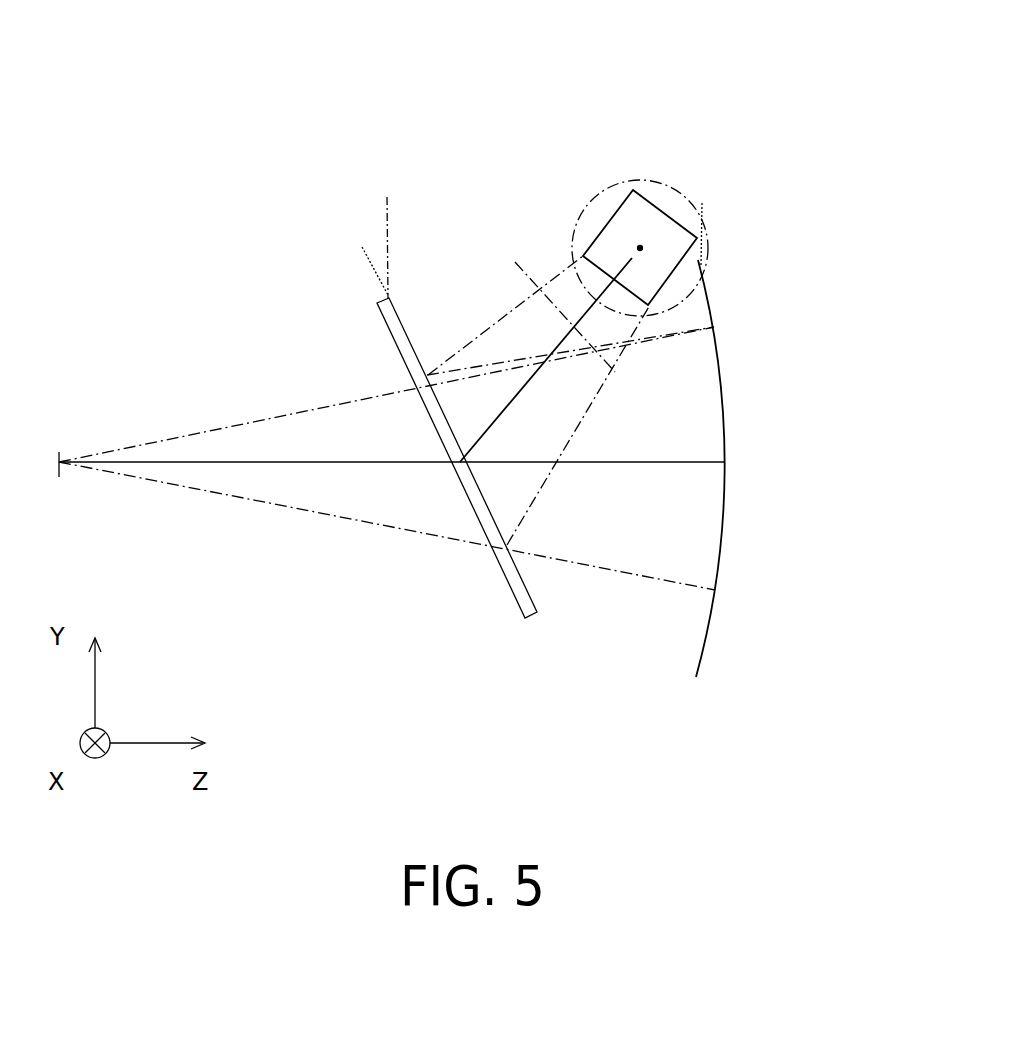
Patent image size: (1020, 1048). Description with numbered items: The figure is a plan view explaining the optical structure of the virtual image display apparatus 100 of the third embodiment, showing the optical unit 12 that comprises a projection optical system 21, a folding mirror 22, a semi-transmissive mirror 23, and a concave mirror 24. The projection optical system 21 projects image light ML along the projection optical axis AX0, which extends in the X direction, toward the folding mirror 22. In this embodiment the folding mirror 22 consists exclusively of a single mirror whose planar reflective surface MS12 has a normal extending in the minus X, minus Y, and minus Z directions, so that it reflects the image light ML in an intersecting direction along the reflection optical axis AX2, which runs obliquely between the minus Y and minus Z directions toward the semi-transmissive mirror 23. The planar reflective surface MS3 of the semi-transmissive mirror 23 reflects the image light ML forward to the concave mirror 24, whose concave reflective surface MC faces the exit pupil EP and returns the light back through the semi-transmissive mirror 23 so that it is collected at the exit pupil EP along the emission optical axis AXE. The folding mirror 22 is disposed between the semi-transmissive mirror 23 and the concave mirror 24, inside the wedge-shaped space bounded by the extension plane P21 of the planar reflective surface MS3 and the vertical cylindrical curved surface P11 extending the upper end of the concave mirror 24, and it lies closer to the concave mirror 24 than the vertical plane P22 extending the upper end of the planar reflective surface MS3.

The virtual image display apparatus 100 is at (632, 120).
The optical unit 12 is at (775, 413).
The projection optical system 21 is at (578, 222).
The folding mirror 22 is at (662, 216).
The semi-transmissive mirror 23 is at (527, 620).
The concave mirror 24 is at (722, 377).
The projection optical axis AX0 is at (640, 247).
The reflection optical axis AX2 is at (522, 392).
The emission optical axis AXE is at (657, 462).
The exit pupil EP is at (59, 452).
The image light ML is at (273, 505).
The planar reflective surface MS12 is at (699, 236).
The planar reflective surface MS3 is at (423, 402).
The concave reflective surface MC is at (723, 512).
The vertical cylindrical curved surface P11 is at (705, 248).
The extension plane P21 is at (370, 265).
The vertical plane P22 is at (388, 240).